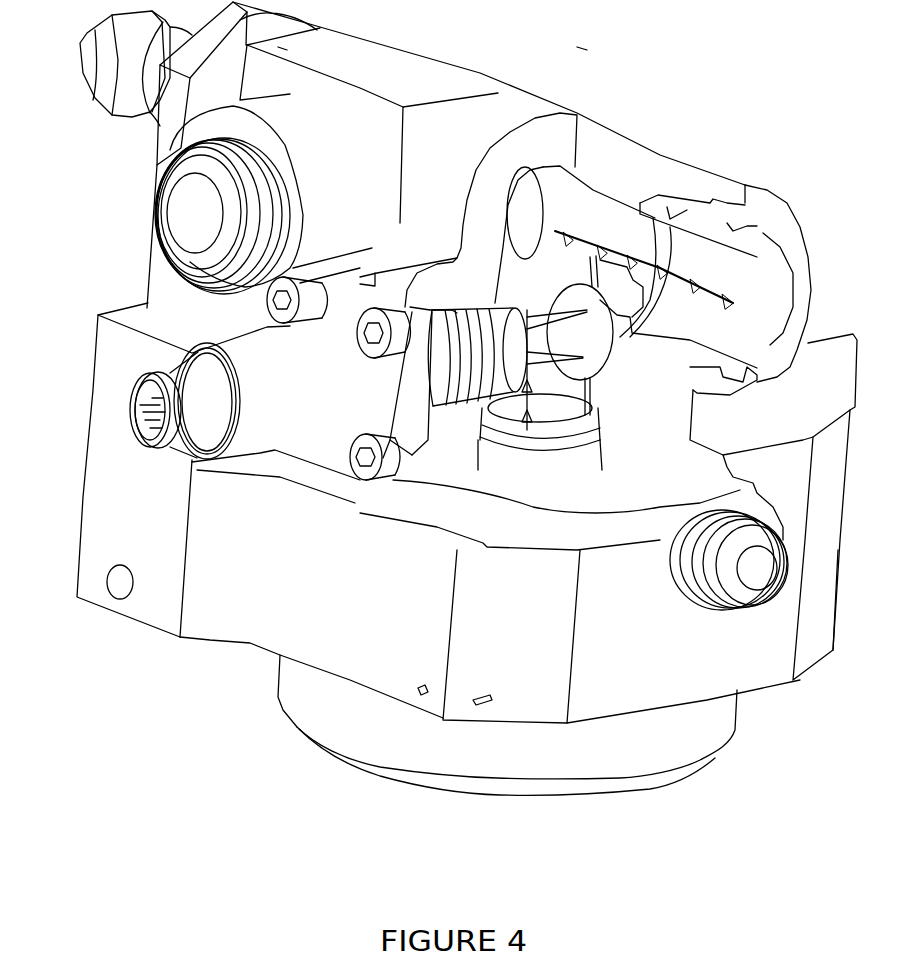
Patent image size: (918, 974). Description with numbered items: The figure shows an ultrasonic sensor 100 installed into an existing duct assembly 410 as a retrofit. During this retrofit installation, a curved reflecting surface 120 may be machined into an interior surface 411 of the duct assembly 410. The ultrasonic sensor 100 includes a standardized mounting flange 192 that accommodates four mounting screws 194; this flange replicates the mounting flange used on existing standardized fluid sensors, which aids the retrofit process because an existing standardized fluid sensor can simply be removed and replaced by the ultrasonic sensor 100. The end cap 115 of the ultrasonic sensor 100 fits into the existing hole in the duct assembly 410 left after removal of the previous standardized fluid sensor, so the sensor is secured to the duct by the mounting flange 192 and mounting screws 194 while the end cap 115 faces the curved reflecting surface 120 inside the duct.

The ultrasonic sensor 100 is at (260, 366).
The end cap 115 is at (500, 337).
The curved reflecting surface 120 is at (592, 352).
The standardized mounting flange 192 is at (400, 410).
The mounting screws 194 is at (362, 479).
The duct assembly 410 is at (497, 103).
The interior surface 411 is at (618, 222).